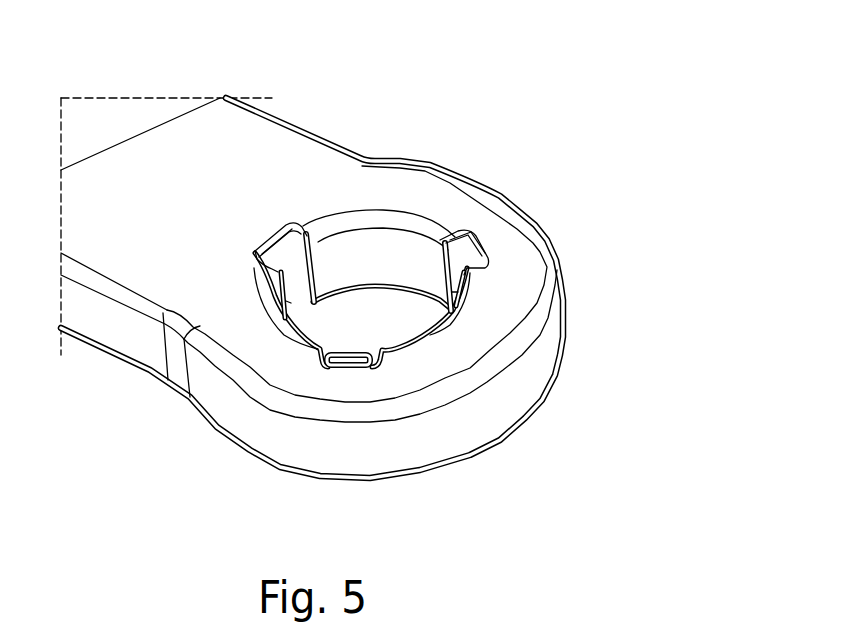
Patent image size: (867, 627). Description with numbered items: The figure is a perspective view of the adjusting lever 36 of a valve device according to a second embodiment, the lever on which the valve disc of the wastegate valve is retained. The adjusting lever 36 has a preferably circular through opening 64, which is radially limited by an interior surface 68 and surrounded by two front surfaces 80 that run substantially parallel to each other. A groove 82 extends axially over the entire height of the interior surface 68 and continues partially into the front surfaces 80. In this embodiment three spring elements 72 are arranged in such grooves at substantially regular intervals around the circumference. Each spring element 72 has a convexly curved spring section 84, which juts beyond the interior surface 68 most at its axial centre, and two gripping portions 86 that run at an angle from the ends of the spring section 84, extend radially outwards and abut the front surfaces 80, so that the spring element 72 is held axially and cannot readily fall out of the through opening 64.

The adjusting lever 36 is at (475, 78).
The through opening 64 is at (423, 260).
The interior surface 68 is at (372, 305).
The spring element 72 is at (293, 263).
The front surface 80 is at (513, 305).
The groove 82 is at (297, 205).
The spring section 84 is at (292, 300).
The gripping portion 86 is at (278, 243).